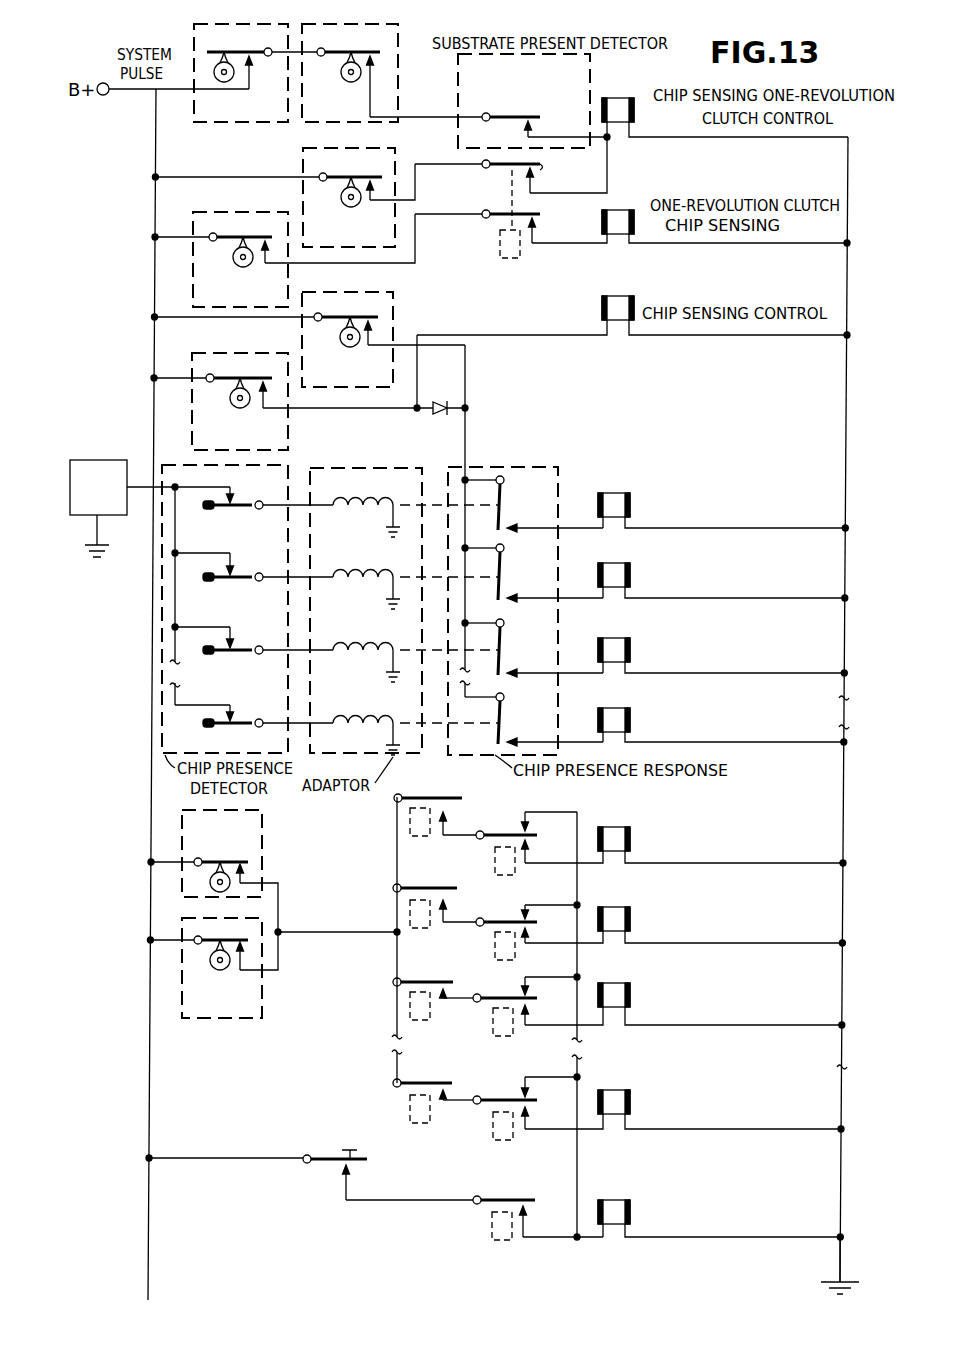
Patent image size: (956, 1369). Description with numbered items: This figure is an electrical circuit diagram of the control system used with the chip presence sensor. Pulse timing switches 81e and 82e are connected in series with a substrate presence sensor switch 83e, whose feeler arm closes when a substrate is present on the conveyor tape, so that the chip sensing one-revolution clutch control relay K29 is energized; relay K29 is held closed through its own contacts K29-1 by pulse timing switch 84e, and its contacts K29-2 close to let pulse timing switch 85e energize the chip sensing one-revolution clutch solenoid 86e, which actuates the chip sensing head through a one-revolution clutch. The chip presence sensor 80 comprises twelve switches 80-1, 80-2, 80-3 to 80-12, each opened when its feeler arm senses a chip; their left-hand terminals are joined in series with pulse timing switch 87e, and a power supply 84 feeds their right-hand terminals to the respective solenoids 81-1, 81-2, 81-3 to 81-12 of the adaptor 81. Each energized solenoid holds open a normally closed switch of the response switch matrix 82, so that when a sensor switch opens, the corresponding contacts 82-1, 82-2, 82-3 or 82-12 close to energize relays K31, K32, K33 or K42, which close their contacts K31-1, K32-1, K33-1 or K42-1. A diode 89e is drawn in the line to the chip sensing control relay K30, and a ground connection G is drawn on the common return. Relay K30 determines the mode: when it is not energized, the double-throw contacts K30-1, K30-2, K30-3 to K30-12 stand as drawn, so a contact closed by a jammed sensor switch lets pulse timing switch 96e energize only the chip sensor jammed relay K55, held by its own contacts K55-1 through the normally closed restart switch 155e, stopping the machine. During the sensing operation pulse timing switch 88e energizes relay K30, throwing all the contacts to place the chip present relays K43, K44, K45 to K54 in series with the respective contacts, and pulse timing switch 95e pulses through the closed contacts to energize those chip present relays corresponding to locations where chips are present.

The chip presence sensor 80 is at (182, 462).
The chip presence sensor switch 80-1 is at (213, 510).
The chip presence sensor switch 80-2 is at (216, 582).
The chip presence sensor switch 80-3 is at (216, 655).
The chip presence sensor switch 80-12 is at (213, 728).
The adaptor 81 is at (380, 467).
The solenoid 81-1 is at (358, 502).
The solenoid 81-2 is at (358, 574).
The solenoid 81-3 is at (358, 647).
The solenoid 81-12 is at (355, 720).
The response switch matrix 82 is at (508, 463).
The switch contacts 82-1 is at (503, 506).
The switch contacts 82-2 is at (503, 574).
The switch contacts 82-3 is at (503, 649).
The switch contacts 82-12 is at (503, 723).
The power supply 84 is at (84, 519).
The pulse timing switch 81e is at (225, 122).
The pulse timing switch 82e is at (317, 122).
The substrate presence sensor switch 83e is at (460, 76).
The pulse timing switch 84e is at (303, 200).
The pulse timing switch 85e is at (209, 212).
The chip sensing one-revolution clutch solenoid 86e is at (618, 208).
The pulse timing switch 87e is at (395, 302).
The pulse timing switch 88e is at (289, 443).
The diode 89e is at (440, 415).
The pulse timing switch 95e is at (265, 855).
The pulse timing switch 96e is at (222, 1020).
The restart switch 155e is at (362, 1167).
The chip sensing one-revolution clutch control relay K29 is at (617, 98).
The relay contacts K29-1 is at (482, 177).
The relay contacts K29-2 is at (430, 234).
The chip sensing control relay K30 is at (618, 296).
The double-throw relay contacts K30-1 is at (504, 833).
The double-throw relay contacts K30-2 is at (497, 922).
The double-throw relay contacts K30-3 is at (497, 998).
The double-throw relay contacts K30-12 is at (497, 1100).
The relay K31 is at (612, 493).
The relay contacts K31-1 is at (440, 798).
The relay K32 is at (612, 563).
The relay contacts K32-1 is at (458, 888).
The relay K33 is at (612, 638).
The relay contacts K33-1 is at (445, 982).
The relay K42 is at (608, 708).
The relay contacts K42-1 is at (443, 1083).
The chip present relay K43 is at (612, 827).
The chip present relay K44 is at (612, 907).
The chip present relay K45 is at (612, 983).
The chip present relay K54 is at (612, 1090).
The chip sensor jammed relay K55 is at (612, 1200).
The relay contacts K55-1 is at (507, 1200).
The ground G is at (848, 398).